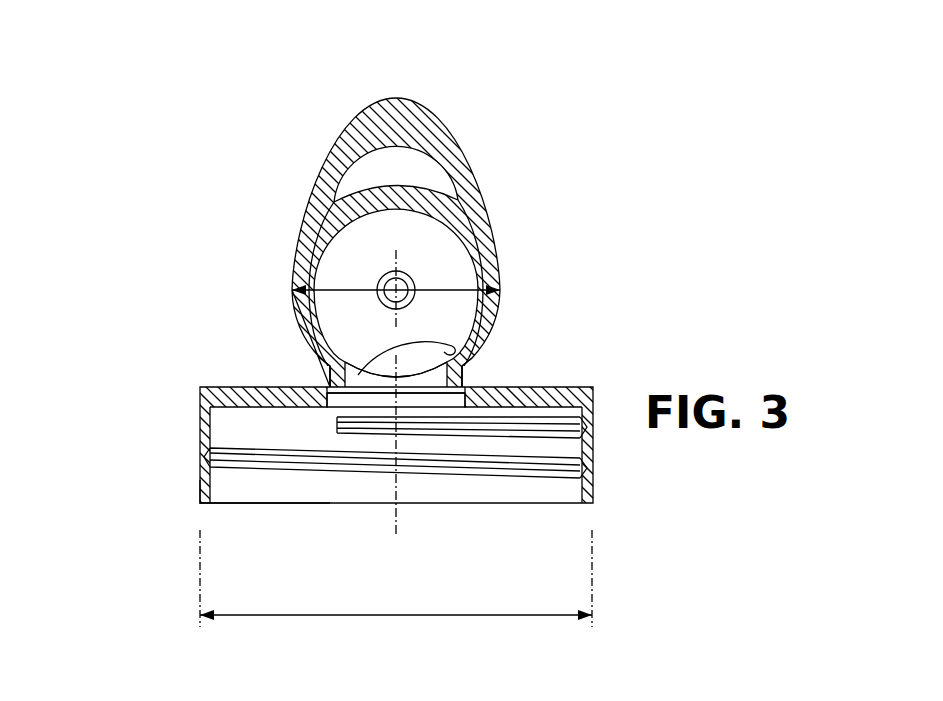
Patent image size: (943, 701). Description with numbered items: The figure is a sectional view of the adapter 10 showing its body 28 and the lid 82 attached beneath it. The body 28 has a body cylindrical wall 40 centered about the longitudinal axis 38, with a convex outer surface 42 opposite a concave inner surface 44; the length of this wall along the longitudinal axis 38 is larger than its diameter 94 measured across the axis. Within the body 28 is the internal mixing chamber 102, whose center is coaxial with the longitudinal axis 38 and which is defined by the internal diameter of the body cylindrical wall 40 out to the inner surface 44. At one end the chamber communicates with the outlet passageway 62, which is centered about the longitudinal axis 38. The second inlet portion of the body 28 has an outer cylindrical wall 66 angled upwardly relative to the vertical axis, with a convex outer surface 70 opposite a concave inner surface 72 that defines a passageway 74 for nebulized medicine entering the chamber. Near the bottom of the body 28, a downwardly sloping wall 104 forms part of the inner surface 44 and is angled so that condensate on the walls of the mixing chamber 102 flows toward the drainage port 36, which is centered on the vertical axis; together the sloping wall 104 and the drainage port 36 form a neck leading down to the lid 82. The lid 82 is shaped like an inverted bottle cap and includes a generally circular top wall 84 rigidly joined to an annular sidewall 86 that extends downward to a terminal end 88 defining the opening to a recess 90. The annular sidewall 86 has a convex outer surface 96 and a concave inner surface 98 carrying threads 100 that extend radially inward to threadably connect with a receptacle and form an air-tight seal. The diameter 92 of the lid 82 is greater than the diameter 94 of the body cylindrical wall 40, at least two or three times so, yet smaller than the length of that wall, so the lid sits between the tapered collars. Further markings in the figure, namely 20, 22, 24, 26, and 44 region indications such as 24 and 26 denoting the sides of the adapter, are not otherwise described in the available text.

The adapter 10 is at (530, 160).
The dome / spout portion 20 is at (425, 78).
The base 22 is at (448, 521).
The first side 24 is at (168, 325).
The second side 26 is at (625, 328).
The body 28 is at (313, 269).
The body cylindrical wall 40 is at (293, 273).
The drainage port 36 is at (372, 388).
The longitudinal axis 38 is at (408, 282).
The outer surface 42 is at (296, 322).
The inner surface 44 is at (462, 256).
The outlet passageway 62 is at (336, 210).
The outer cylindrical wall 66 is at (342, 237).
The convex outer surface 70 is at (347, 118).
The concave inner surface 72 is at (324, 167).
The passageway 74 is at (383, 158).
The lid 82 is at (316, 445).
The annular sidewall 86 is at (200, 411).
The circular top wall 84 is at (268, 387).
The terminal end 88 is at (593, 504).
The recess 90 is at (254, 488).
The diameter of the lid 92 is at (405, 617).
The diameter of the body cylindrical wall 94 is at (320, 246).
The outer surface of the annular sidewall 96 is at (208, 456).
The inner surface of the annular sidewall 98 is at (213, 486).
The threads 100 is at (517, 478).
The mixing chamber 102 is at (440, 302).
The sloping wall 104 is at (440, 338).